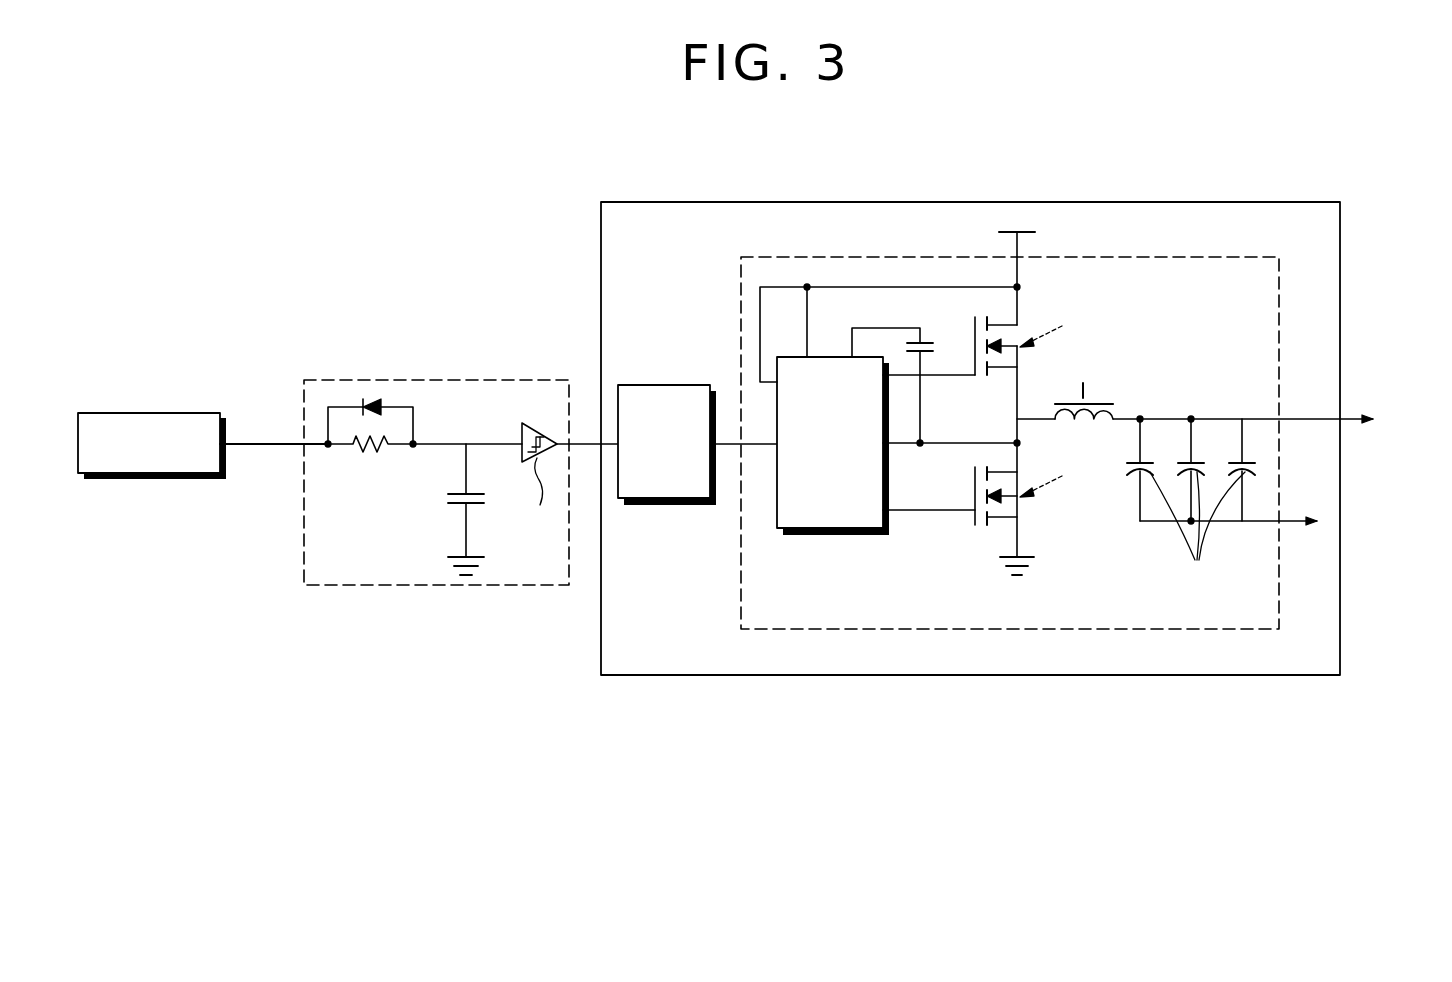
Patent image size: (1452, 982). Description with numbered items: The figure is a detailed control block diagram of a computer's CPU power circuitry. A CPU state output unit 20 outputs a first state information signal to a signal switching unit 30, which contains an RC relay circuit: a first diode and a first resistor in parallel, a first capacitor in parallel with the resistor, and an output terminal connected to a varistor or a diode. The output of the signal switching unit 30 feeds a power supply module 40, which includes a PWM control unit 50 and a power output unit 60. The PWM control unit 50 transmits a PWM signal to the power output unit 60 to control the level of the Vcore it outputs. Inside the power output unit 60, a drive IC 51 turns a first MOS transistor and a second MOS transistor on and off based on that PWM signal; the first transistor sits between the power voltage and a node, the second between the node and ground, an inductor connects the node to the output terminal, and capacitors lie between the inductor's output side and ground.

The CPU state output unit 20 is at (149, 412).
The signal switching unit 30 is at (437, 380).
The power supply module 40 is at (847, 676).
The PWM control unit 50 is at (668, 506).
The drive IC 51 is at (830, 536).
The power output unit 60 is at (1011, 630).